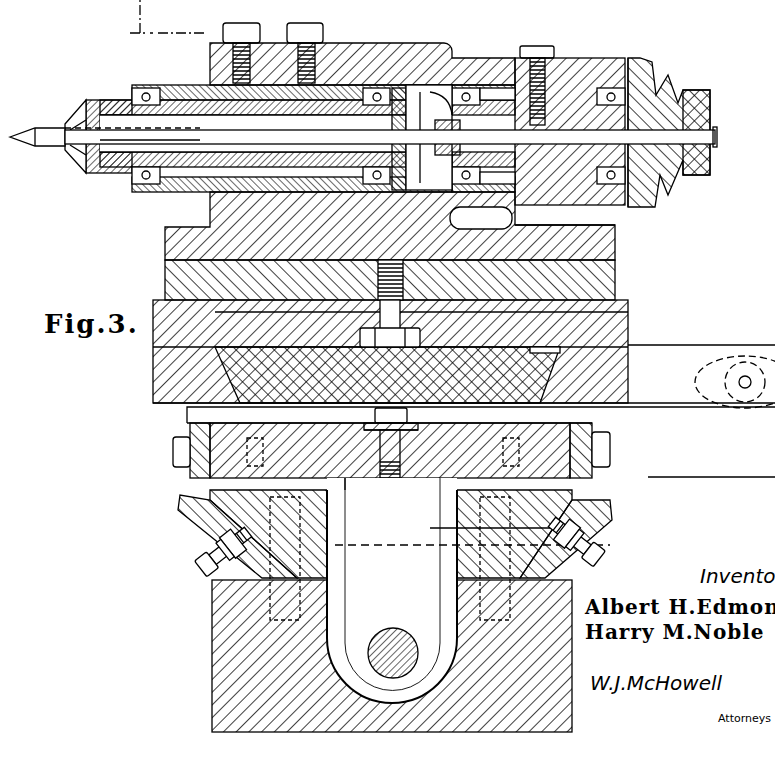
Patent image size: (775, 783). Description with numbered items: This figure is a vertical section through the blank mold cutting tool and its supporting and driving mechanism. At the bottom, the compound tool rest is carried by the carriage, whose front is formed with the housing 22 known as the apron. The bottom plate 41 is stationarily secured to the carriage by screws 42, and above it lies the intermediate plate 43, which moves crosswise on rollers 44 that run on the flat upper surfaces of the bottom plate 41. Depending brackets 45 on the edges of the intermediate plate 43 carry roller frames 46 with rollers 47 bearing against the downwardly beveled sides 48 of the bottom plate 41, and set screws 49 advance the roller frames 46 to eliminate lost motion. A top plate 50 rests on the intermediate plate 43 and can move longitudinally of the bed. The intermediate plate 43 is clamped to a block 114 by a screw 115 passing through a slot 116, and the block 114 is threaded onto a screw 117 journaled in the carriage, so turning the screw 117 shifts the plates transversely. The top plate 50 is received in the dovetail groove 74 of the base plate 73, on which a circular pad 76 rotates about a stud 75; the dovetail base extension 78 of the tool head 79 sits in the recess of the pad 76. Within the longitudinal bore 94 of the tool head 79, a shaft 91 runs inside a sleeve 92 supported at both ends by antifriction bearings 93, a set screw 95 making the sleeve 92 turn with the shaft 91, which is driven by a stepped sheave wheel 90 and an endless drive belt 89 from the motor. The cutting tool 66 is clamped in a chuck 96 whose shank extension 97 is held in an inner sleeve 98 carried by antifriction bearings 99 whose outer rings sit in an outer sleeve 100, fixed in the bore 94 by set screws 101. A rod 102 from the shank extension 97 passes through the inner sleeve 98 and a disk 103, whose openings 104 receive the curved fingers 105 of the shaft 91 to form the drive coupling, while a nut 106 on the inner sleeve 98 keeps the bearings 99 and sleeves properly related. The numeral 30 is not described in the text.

The housing 22 is at (130, 4).
The slot 30 is at (392, 590).
The bottom plate 41 is at (486, 528).
The screws 42 is at (440, 558).
The intermediate plate 43 is at (345, 490).
The rollers 44 is at (208, 492).
The brackets 45 is at (192, 519).
The roller frames 46 is at (195, 541).
The rollers 47 is at (205, 580).
The beveled sides 48 is at (226, 583).
The set screws 49 is at (170, 568).
The top plate 50 is at (186, 409).
The cutting tool 66 is at (44, 130).
The base plate 73 is at (608, 324).
The dovetail groove 74 is at (218, 372).
The stud 75 is at (610, 307).
The circular pad 76 is at (605, 271).
The base extension 78 is at (615, 236).
The tool head 79 is at (220, 211).
The endless drive belt 89 is at (690, 132).
The stepped sheave wheel 90 is at (668, 98).
The shaft 91 is at (717, 131).
The sleeve 92 is at (585, 98).
The antifriction bearings 93 is at (470, 88).
The bore 94 is at (545, 58).
The set screw 95 is at (548, 98).
The chuck 96 is at (75, 118).
The shank extension 97 is at (110, 100).
The sleeve 98 is at (128, 175).
The antifriction bearings 99 is at (150, 88).
The sleeve 100 is at (186, 83).
The set screws 101 is at (268, 27).
The rod 102 is at (325, 160).
The disk 103 is at (440, 185).
The openings 104 is at (430, 95).
The curved fingers 105 is at (455, 100).
The nut 106 is at (400, 88).
The block 114 is at (425, 598).
The screw 115 is at (410, 425).
The slot 116 is at (372, 438).
The screw 117 is at (425, 621).